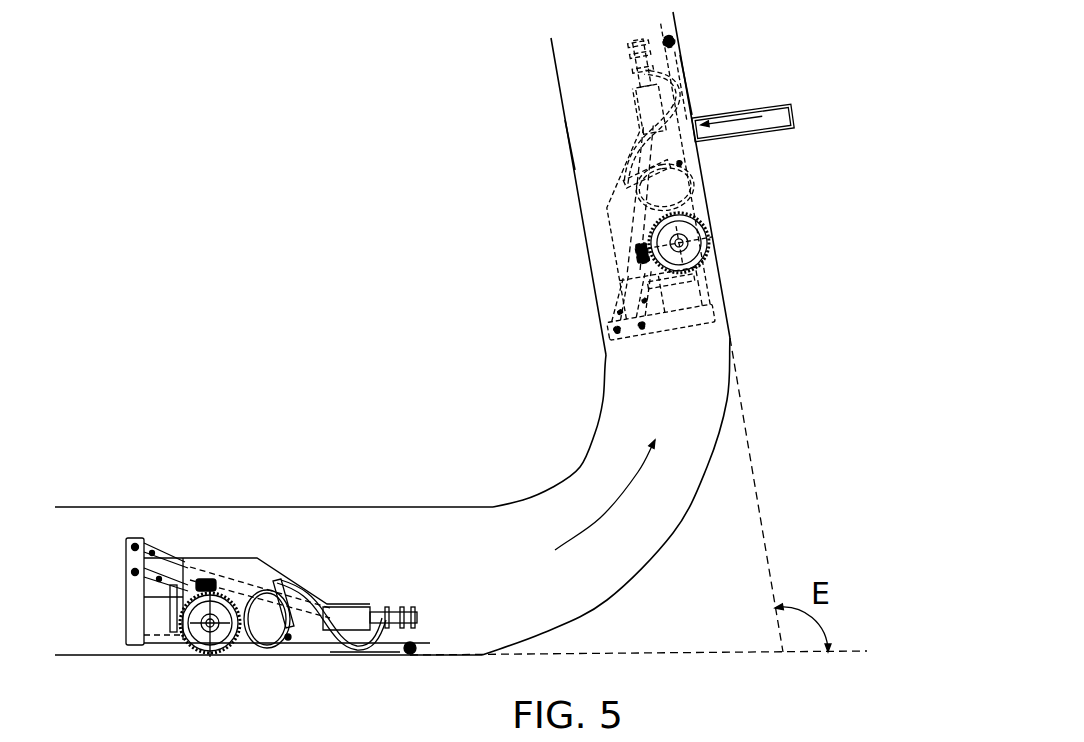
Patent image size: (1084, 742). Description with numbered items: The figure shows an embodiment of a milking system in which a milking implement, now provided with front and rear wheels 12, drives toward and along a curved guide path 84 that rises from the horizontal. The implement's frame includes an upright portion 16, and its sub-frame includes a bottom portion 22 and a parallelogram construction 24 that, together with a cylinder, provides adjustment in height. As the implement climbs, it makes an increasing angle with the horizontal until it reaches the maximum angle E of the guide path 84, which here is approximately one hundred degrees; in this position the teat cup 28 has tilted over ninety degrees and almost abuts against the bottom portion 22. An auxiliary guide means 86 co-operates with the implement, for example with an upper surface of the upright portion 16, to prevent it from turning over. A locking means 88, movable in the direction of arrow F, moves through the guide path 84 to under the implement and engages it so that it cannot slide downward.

The wheels 12 is at (188, 646).
The upright portion 16 is at (137, 607).
The bottom portion 22 is at (310, 637).
The parallelogram construction 24 is at (173, 556).
The teat cup 28 is at (410, 613).
The guide path 84 is at (687, 83).
The auxiliary guide means 86 is at (569, 144).
The locking means 88 is at (747, 120).